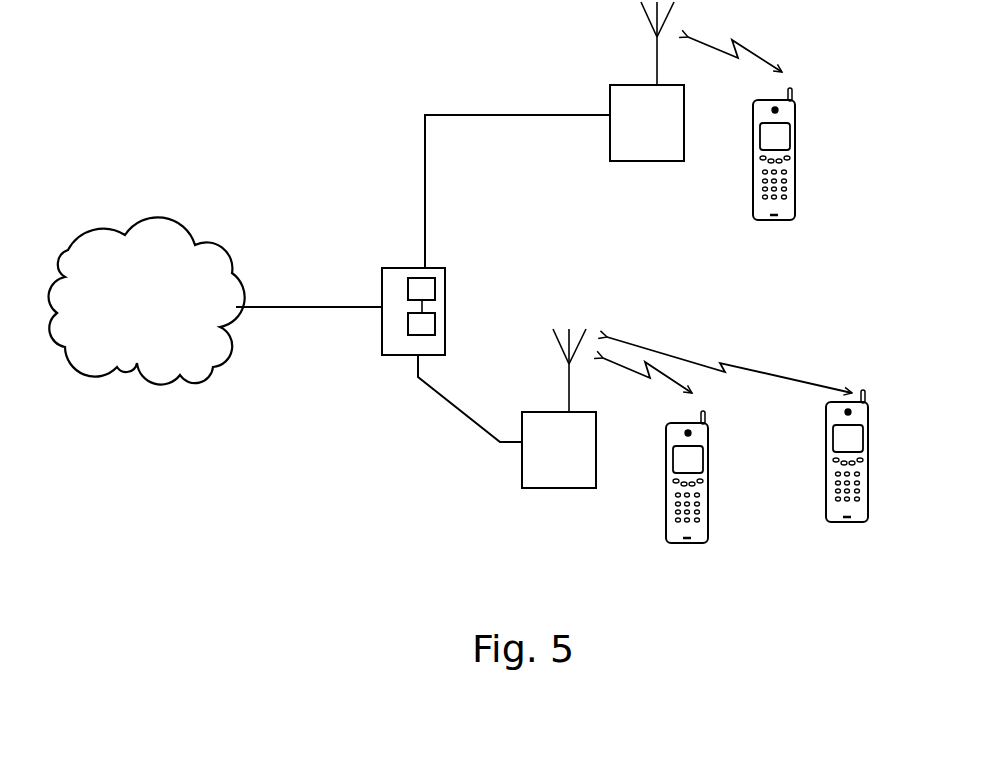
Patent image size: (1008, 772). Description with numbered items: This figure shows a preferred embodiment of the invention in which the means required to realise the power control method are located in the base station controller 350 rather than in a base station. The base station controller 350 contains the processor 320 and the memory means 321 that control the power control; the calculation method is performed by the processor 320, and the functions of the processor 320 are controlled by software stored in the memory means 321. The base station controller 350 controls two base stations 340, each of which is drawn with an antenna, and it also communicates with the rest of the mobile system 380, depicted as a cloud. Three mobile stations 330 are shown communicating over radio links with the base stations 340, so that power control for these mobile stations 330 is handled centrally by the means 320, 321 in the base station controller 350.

The rest of the mobile system 380 is at (155, 217).
The base station controller 350 is at (434, 283).
The processor 320 is at (438, 275).
The memory means 321 is at (436, 313).
The base station 340 is at (648, 162).
The mobile station 330 is at (753, 213).